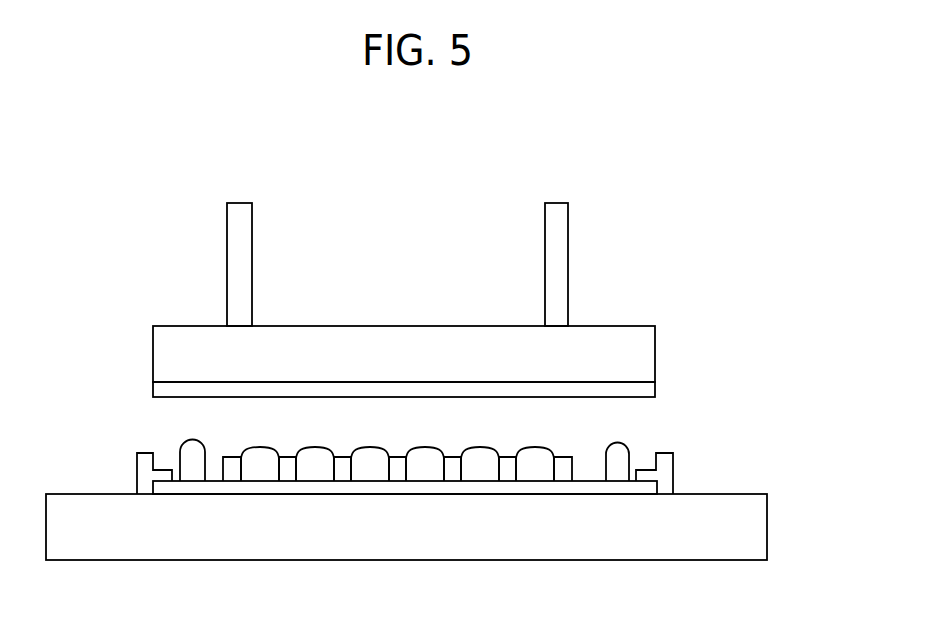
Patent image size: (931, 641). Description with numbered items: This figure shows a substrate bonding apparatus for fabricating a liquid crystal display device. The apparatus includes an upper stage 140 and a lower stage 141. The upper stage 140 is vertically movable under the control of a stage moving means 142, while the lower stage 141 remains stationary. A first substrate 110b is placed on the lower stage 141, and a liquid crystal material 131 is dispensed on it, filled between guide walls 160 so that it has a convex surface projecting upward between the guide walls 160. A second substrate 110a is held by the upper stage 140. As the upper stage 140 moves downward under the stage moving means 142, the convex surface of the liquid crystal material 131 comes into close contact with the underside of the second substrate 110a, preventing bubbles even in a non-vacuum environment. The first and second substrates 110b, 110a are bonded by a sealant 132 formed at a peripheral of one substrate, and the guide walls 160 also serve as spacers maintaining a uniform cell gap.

The stage moving means 142 is at (235, 262).
The upper stage 140 is at (640, 353).
The second substrate 110a is at (640, 391).
The lower stage 141 is at (752, 533).
The first substrate 110b is at (577, 488).
The liquid crystal material 131 is at (258, 453).
The sealant 132 is at (618, 449).
The guide walls 160 is at (288, 473).